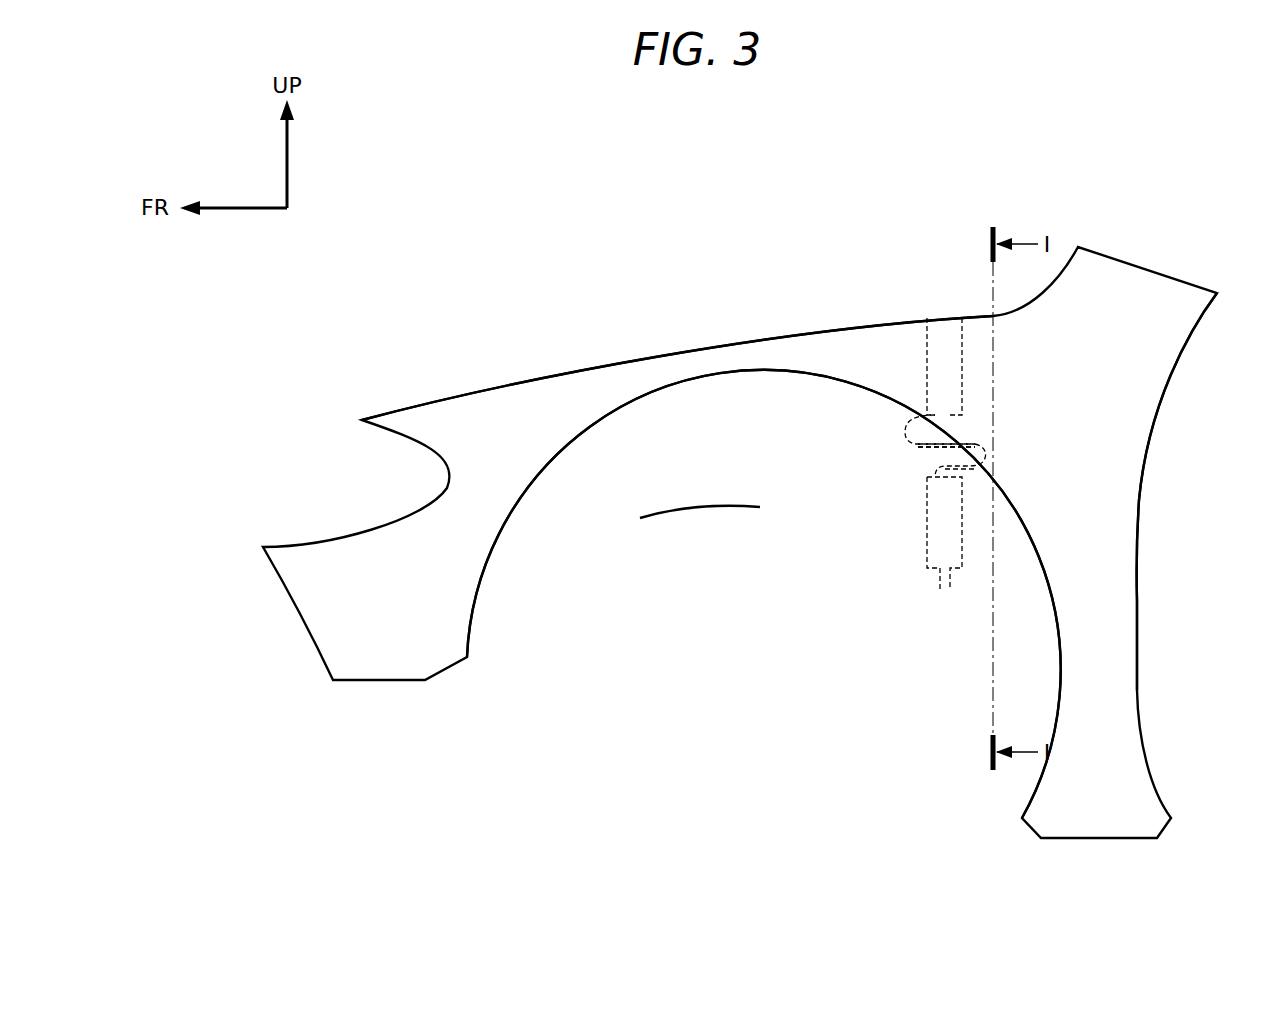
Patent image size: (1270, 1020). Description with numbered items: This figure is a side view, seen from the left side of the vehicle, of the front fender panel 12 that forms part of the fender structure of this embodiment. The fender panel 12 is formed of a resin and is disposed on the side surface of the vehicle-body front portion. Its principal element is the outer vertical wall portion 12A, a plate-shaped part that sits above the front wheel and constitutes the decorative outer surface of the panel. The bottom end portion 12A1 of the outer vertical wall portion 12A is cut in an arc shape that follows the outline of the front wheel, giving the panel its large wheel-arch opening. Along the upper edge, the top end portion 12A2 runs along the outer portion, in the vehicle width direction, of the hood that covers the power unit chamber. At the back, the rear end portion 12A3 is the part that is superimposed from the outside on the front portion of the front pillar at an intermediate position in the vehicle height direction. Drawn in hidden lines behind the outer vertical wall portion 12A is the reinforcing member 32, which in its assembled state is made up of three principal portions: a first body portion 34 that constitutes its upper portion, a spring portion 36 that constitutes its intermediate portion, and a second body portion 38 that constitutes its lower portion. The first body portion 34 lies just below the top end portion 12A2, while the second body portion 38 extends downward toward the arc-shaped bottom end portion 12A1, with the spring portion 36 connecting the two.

The front fender panel 12 is at (566, 655).
The outer vertical wall portion 12A is at (634, 530).
The bottom end portion 12A1 is at (752, 508).
The top end portion 12A2 is at (685, 347).
The rear end portion 12A3 is at (1147, 450).
The reinforcing member 32 is at (878, 446).
The first body portion 34 is at (948, 318).
The spring portion 36 is at (900, 428).
The second body portion 38 is at (927, 533).